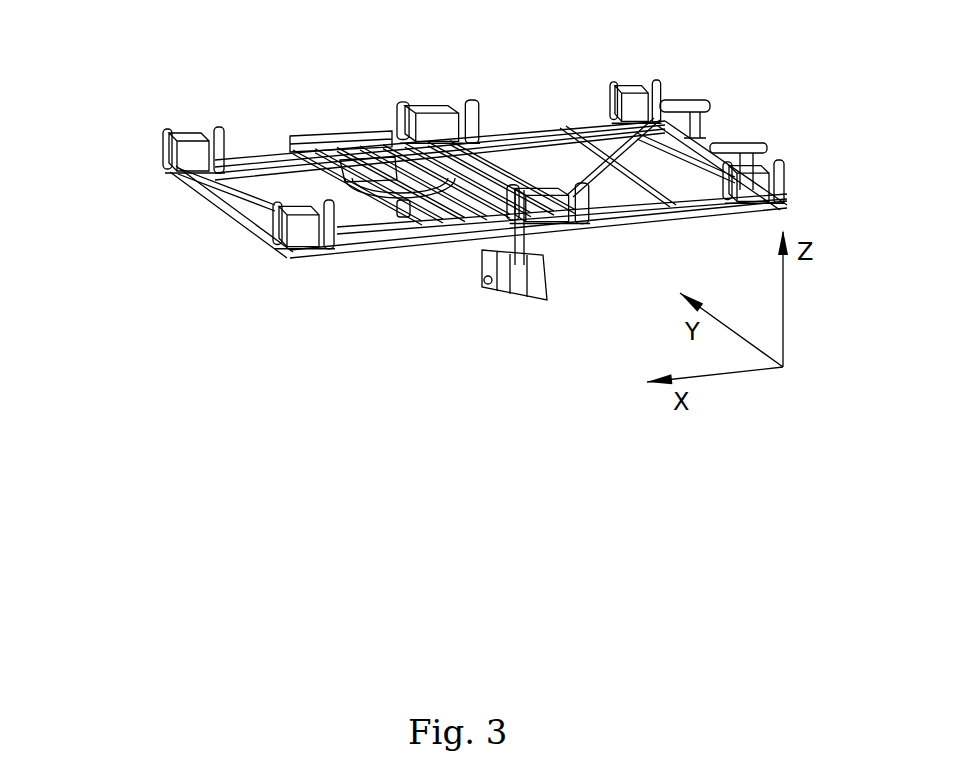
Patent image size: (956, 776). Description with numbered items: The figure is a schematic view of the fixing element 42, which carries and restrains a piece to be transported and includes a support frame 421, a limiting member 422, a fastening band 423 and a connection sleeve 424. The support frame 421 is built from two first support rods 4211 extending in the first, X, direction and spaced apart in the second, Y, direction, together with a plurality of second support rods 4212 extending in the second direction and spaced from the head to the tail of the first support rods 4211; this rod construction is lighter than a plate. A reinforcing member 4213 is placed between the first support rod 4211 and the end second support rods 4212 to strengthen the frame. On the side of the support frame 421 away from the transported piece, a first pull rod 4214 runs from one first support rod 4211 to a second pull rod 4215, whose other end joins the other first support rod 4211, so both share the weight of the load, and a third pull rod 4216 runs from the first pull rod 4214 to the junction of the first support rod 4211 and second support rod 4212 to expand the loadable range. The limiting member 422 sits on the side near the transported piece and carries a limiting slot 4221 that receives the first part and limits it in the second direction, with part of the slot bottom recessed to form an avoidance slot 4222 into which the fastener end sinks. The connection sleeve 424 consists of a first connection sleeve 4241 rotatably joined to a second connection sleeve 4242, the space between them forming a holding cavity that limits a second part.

The fixing element 42 is at (287, 83).
The support frame 421 is at (227, 217).
The first support rod 4211 is at (383, 253).
The second support rod 4212 is at (710, 143).
The reinforcing member 4213 is at (182, 185).
The first pull rod 4214 is at (473, 263).
The second pull rod 4215 is at (547, 277).
The third pull rod 4216 is at (257, 197).
The limiting member 422 is at (565, 215).
The limiting slot 4221 is at (177, 137).
The avoidance slot 4222 is at (170, 157).
The fastening band 423 is at (482, 103).
The connection sleeve 424 is at (697, 97).
The first connection sleeve 4241 is at (310, 137).
The second connection sleeve 4242 is at (377, 137).